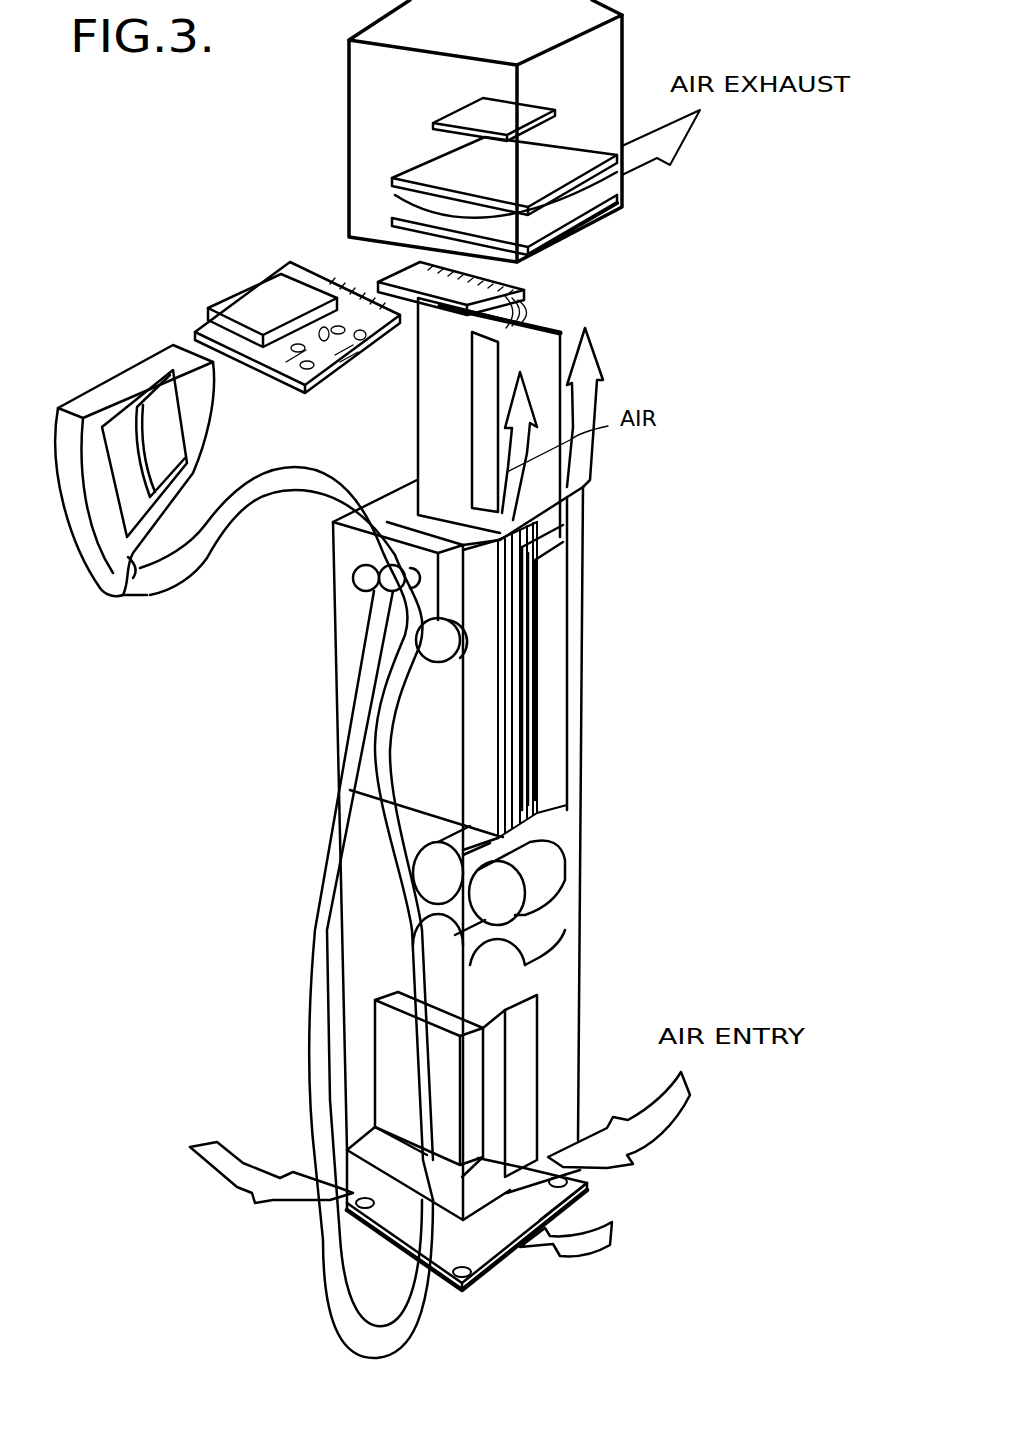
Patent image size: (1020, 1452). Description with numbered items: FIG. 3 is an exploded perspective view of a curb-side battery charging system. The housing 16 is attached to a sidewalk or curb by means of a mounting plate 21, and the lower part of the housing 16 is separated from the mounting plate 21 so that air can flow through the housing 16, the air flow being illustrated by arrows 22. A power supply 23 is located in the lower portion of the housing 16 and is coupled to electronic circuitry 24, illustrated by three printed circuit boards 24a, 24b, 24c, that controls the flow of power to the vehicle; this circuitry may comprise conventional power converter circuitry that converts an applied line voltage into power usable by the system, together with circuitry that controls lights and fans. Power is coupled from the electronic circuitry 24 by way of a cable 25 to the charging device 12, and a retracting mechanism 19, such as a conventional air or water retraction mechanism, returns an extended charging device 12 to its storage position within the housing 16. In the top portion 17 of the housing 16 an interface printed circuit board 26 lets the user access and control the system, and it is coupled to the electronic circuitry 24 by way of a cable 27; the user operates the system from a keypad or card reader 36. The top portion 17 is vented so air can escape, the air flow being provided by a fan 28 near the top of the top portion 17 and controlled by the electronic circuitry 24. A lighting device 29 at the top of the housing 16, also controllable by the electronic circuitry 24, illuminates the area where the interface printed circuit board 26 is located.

The charging device 12 is at (139, 385).
The housing 16 is at (333, 665).
The top portion 17 is at (349, 75).
The retracting mechanism 19 is at (316, 580).
The mounting plate 21 is at (583, 910).
The arrows 22 is at (248, 1180).
The power supply 23 is at (528, 1055).
The electronic circuitry 24 is at (298, 771).
The printed circuit board 24a is at (475, 763).
The printed circuit board 24b is at (508, 717).
The printed circuit board 24c is at (553, 603).
The cable 25 is at (318, 940).
The interface printed circuit board 26 is at (248, 302).
The cable 27 is at (497, 307).
The fan 28 is at (590, 205).
The lighting device 29 is at (432, 127).
The keypad or card reader 36 is at (293, 370).